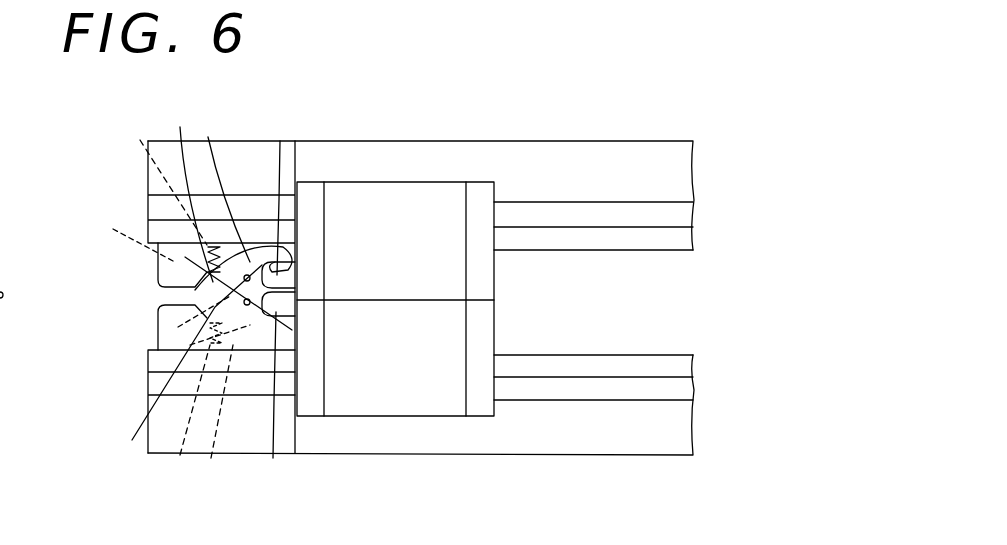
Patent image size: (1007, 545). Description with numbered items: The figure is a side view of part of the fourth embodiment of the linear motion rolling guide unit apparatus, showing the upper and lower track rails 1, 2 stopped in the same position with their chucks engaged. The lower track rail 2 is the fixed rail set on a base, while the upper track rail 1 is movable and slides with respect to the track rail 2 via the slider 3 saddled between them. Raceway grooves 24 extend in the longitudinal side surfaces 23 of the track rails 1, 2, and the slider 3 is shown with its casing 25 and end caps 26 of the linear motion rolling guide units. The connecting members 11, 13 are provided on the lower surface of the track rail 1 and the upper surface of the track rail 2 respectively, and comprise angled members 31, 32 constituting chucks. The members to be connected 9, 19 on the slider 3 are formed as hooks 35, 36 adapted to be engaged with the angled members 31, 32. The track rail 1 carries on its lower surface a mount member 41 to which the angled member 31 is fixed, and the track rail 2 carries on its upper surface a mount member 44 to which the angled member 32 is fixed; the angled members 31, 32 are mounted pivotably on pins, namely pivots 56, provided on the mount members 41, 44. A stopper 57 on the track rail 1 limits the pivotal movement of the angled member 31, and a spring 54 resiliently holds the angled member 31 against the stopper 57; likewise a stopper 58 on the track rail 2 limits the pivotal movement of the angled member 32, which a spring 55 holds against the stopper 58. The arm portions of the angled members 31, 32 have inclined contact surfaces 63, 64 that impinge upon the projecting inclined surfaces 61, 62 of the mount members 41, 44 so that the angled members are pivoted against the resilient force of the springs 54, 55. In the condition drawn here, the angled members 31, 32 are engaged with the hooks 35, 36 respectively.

The track rail 1 is at (554, 140).
The track rail 2 is at (554, 460).
The slider 3 is at (385, 184).
The member to be connected 9 is at (297, 281).
The connecting member 11 is at (187, 280).
The connecting member 13 is at (175, 320).
The member to be connected 19 is at (297, 306).
The longitudinal side surface 23 is at (612, 183).
The raceway groove 24 is at (642, 217).
The casing 25 is at (400, 256).
The end cap 26 is at (312, 190).
The angled member 31 is at (225, 186).
The angled member 32 is at (214, 417).
The hook 35 is at (284, 192).
The hook 36 is at (269, 401).
The mount member 41 is at (165, 250).
The mount member 44 is at (172, 350).
The spring 54 is at (186, 190).
The spring 55 is at (187, 420).
The pivot 56 is at (172, 275).
The stopper 57 is at (235, 262).
The stopper 58 is at (237, 345).
The projecting inclined surface 61 is at (160, 177).
The projecting inclined surface 62 is at (185, 366).
The inclined contact surface 63 is at (165, 307).
The inclined contact surface 64 is at (127, 234).